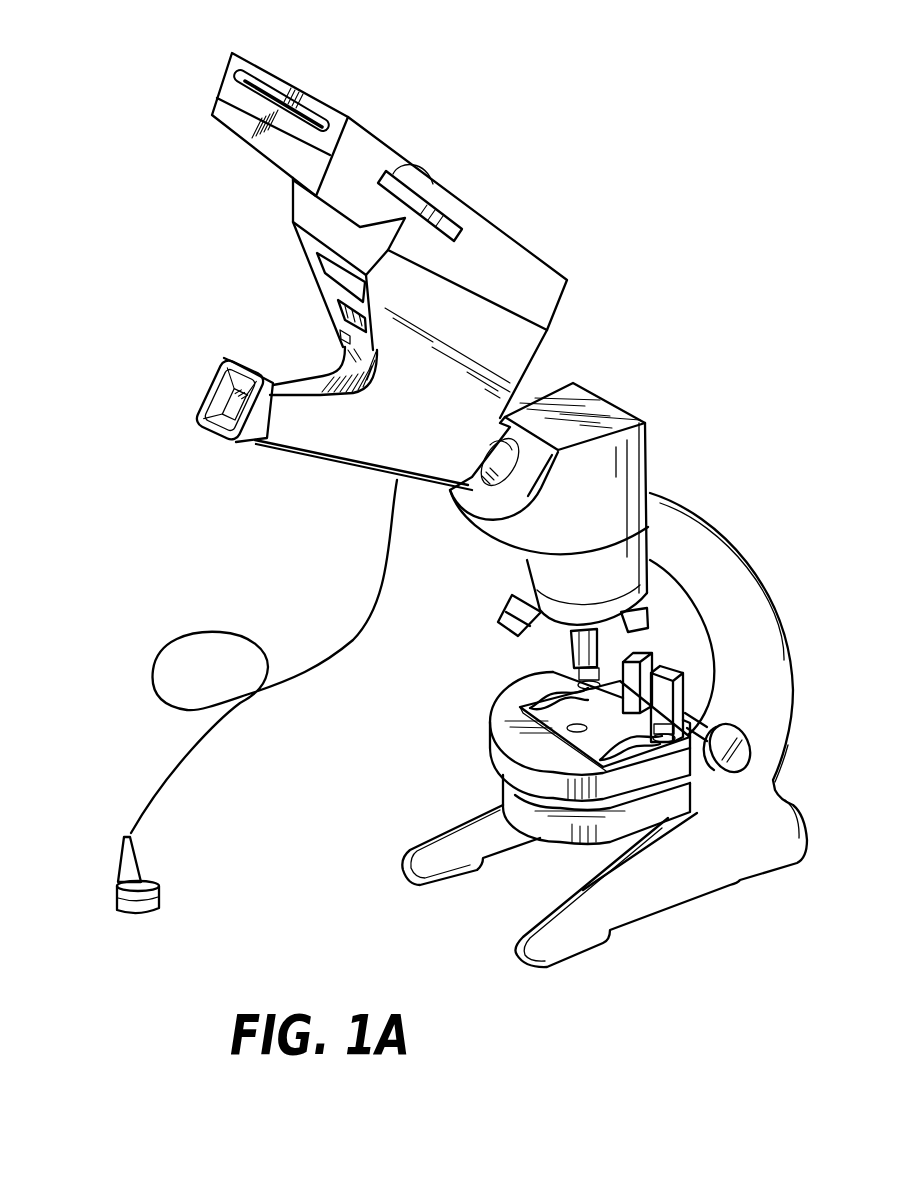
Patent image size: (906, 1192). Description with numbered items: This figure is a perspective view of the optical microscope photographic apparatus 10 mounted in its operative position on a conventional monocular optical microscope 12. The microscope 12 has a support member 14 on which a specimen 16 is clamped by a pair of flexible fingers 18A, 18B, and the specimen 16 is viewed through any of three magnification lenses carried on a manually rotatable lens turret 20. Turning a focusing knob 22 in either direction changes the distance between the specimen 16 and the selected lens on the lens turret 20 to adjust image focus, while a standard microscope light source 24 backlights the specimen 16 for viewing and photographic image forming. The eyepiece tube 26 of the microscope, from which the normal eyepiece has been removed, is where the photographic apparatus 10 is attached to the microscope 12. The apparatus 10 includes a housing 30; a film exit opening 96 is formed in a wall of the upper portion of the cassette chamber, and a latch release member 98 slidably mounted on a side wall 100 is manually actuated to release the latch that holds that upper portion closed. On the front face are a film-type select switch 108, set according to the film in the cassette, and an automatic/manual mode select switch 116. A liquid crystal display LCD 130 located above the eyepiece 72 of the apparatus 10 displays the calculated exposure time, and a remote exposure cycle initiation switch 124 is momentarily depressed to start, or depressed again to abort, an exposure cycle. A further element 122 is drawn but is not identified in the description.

The optical microscope photographic apparatus 10 is at (530, 78).
The monocular optical microscope 12 is at (412, 758).
The support member 14 is at (508, 706).
The specimen 16 is at (575, 740).
The flexible finger 18A is at (660, 740).
The flexible finger 18B is at (562, 685).
The lens turret 20 is at (665, 598).
The focusing knob 22 is at (750, 747).
The microscope light source 24 is at (560, 834).
The eyepiece tube 26 is at (466, 507).
The housing 30 is at (507, 350).
The eyepiece 72 is at (228, 450).
The film exit opening 96 is at (258, 76).
The latch release member 98 is at (432, 207).
The side wall 100 is at (493, 260).
The film-type select switch 108 is at (343, 315).
The automatic/manual mode select switch 116 is at (340, 337).
The grip 122 is at (376, 354).
The exposure cycle initiation switch 124 is at (117, 902).
The liquid crystal display 130 is at (330, 268).